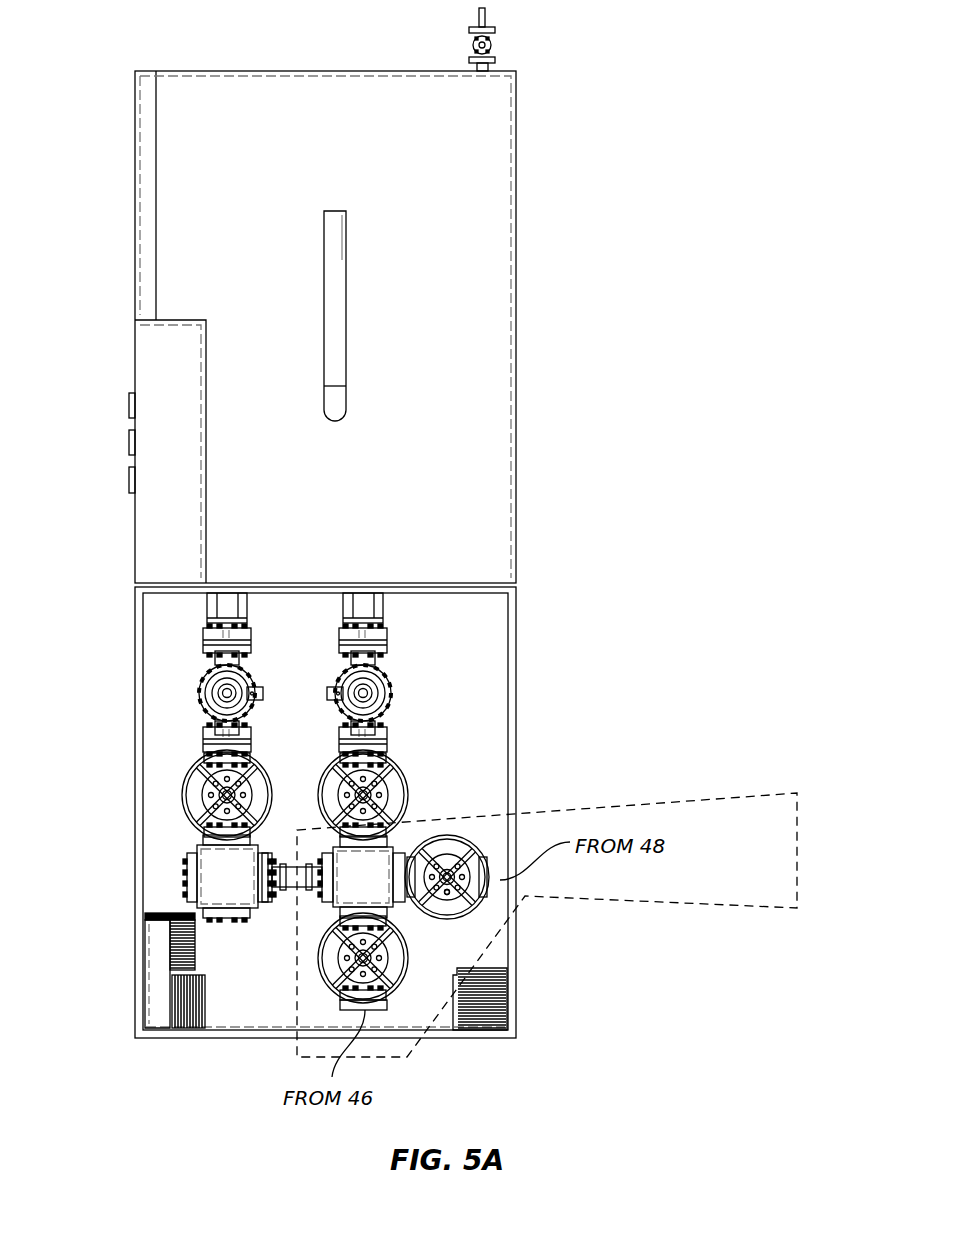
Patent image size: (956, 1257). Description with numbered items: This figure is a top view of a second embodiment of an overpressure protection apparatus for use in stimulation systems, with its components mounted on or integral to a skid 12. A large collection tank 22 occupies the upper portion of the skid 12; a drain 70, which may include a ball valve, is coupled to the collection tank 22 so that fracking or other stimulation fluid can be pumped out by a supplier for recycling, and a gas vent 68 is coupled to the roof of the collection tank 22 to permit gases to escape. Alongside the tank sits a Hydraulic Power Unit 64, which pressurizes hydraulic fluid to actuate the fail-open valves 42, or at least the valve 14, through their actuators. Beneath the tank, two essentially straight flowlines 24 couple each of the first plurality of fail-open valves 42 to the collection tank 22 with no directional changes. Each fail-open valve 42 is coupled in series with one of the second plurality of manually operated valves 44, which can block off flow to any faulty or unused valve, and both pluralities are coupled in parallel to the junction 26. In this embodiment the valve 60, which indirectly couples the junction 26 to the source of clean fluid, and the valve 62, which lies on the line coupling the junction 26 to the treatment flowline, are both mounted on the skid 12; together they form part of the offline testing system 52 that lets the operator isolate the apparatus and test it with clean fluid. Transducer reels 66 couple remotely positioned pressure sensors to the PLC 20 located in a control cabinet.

The skid 12 is at (135, 200).
The collection tank 22 is at (515, 215).
The Hydraulic Power Unit 64 is at (183, 566).
The gas vent 68 is at (337, 212).
The drain 70 is at (495, 45).
The PLC 20 is at (150, 970).
The flowlines 24 is at (228, 595).
The first plurality of fail-open valves 42 is at (203, 648).
The valve 14 is at (392, 693).
The second plurality of valves 44 is at (183, 795).
The junction 26 is at (376, 888).
The valve 60 is at (480, 908).
The valve 62 is at (408, 960).
The transducer reels 66 is at (195, 930).
The offline testing system 52 is at (658, 801).